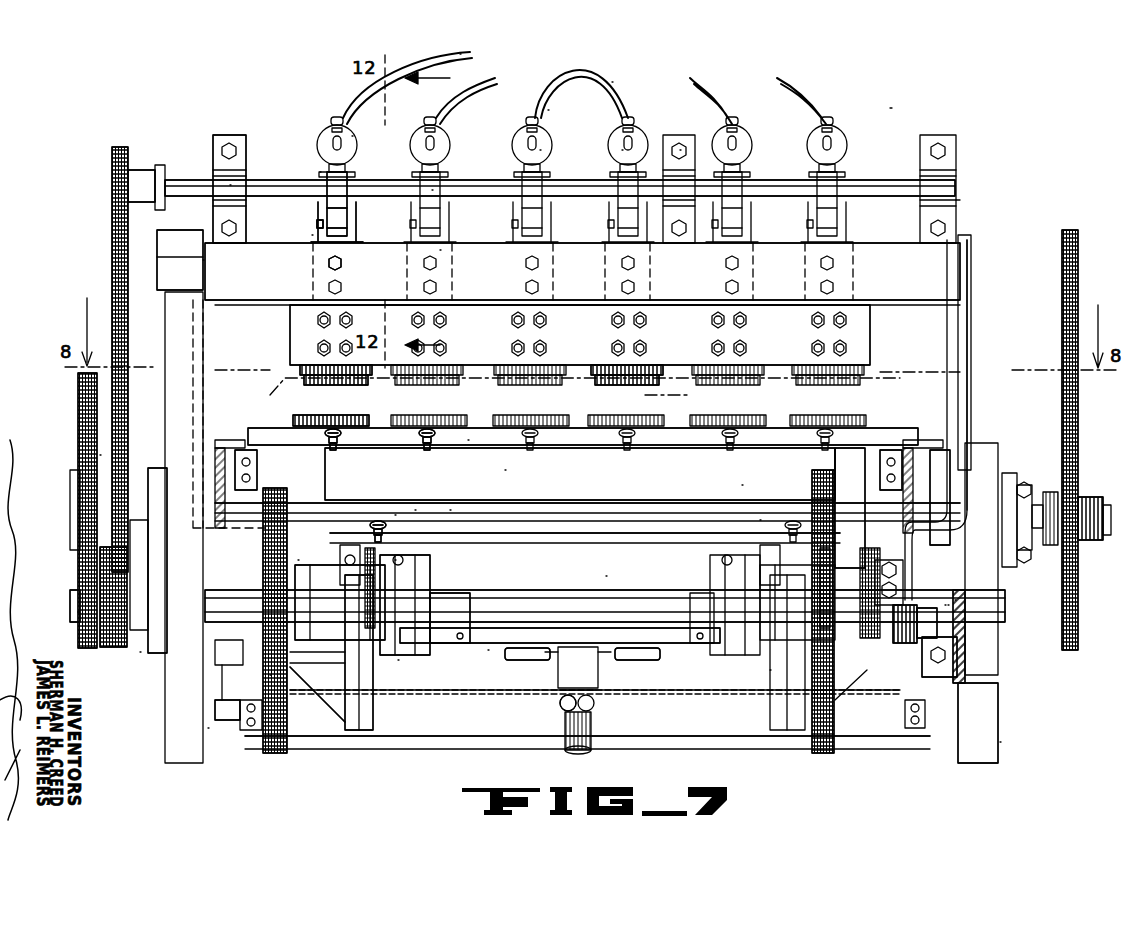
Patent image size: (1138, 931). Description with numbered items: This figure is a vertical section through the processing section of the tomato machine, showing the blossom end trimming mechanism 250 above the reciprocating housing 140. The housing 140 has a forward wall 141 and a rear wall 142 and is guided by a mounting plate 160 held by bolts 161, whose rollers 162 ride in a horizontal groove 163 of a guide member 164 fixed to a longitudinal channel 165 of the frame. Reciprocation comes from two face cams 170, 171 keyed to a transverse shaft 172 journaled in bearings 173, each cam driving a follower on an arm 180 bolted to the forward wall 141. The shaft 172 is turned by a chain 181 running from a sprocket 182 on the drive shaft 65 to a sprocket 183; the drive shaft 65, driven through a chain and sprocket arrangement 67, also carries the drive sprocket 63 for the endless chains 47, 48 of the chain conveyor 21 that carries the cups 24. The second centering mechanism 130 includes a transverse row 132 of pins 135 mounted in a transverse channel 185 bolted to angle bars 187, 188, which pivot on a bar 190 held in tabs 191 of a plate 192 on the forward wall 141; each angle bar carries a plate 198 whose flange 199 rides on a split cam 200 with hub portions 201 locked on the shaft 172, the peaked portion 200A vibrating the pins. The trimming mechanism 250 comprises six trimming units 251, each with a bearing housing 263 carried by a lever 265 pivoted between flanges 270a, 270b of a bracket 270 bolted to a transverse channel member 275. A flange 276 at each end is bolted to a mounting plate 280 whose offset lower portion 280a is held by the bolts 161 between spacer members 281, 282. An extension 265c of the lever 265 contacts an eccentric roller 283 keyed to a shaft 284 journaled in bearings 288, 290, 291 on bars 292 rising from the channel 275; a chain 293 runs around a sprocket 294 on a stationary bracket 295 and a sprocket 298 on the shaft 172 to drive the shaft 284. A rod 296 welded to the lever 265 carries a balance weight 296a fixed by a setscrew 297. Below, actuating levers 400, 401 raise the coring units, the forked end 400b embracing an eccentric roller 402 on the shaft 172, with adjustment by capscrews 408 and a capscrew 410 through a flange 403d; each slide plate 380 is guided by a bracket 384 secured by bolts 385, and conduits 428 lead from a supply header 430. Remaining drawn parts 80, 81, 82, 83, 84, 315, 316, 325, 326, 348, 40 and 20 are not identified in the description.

The blossom end trimming mechanism 250 is at (907, 101).
The flexible conduit 315 is at (462, 52).
The flexible conduit 316 is at (612, 82).
The trimming unit 251 is at (610, 112).
The bar 292 is at (213, 140).
The bearing 288 is at (230, 185).
The bearing 290 is at (693, 125).
The setscrew 297 is at (352, 136).
The balance weight 296a is at (540, 150).
The rod 296 is at (622, 150).
The bearing housing 263 is at (320, 172).
The eccentric roller 283 is at (432, 190).
The sprocket 294 is at (128, 188).
The stationary bracket 295 is at (150, 212).
The lever 265 is at (325, 210).
The extension 265c is at (316, 228).
The flange 276 is at (203, 260).
The flange 270a is at (312, 235).
The channel member 275 is at (282, 300).
The bracket 270 is at (360, 283).
The flange 270b is at (440, 250).
The shaft 284 is at (956, 184).
The bearing 291 is at (960, 205).
The chain 293 is at (112, 254).
The mounting plate 280 is at (203, 348).
The clamp block 348 is at (580, 335).
The knurled roller 325 is at (462, 386).
The knurled roller 326 is at (640, 380).
The cups 24 is at (520, 415).
The transverse row 132 is at (325, 438).
The second centering mechanism 130 is at (850, 450).
The bracket 82 is at (902, 450).
The endless chain 48 is at (935, 450).
The chain 181 is at (78, 412).
The sprocket 182 is at (100, 455).
The drive shaft 65 is at (75, 515).
The chain and sprocket arrangement 67 is at (1105, 580).
The drive sprocket 63 is at (225, 543).
The screw bracket 81 is at (258, 475).
The pins 135 is at (340, 448).
The angle bar 187 is at (440, 470).
The frame member 80 is at (500, 430).
The bracket 84 is at (505, 470).
The plate 198 is at (450, 510).
The arm 180 is at (298, 560).
The capscrew 410 is at (395, 515).
The tabs 191 is at (415, 510).
The transverse channel 185 is at (580, 474).
The bar 190 is at (598, 505).
The angle bar 188 is at (742, 485).
The forked end 400b is at (335, 560).
The capscrews 408 is at (395, 560).
The flange 199 is at (462, 540).
The flange 403d is at (760, 520).
The split cam 200 is at (430, 557).
The hub portions 201 is at (440, 580).
The forward wall 141 is at (605, 583).
The transverse shaft 172 is at (550, 605).
The plate 192 is at (603, 560).
The eccentric roller 402 is at (380, 606).
The actuating lever 400 is at (395, 660).
The housing 140 is at (492, 660).
The vertical slide plate 380 is at (400, 722).
The base bar 83 is at (490, 746).
The supply header 430 is at (565, 690).
The camming surface portion 200A is at (470, 636).
The conduit 428 is at (630, 648).
The rear wall 142 is at (670, 655).
The actuating lever 401 is at (770, 670).
The bracket 384 is at (400, 740).
The bolts 385 is at (295, 670).
The face cam 170 is at (275, 753).
The face cam 171 is at (830, 750).
The sprocket 298 is at (105, 600).
The sprocket 183 is at (78, 612).
The bearings 173 is at (140, 652).
The lower end portion 280a is at (270, 675).
The endless chain 47 is at (215, 724).
The chain conveyor 21 is at (200, 733).
The mounting plate 160 is at (917, 605).
The bolts 161 is at (955, 600).
The horizontal groove 163 is at (948, 605).
The guide member 164 is at (945, 605).
The rollers 162 is at (937, 612).
The longitudinal channel 165 is at (965, 630).
The spacer member 281 is at (895, 640).
The spacer member 282 is at (870, 690).
The frame plate 40 is at (998, 702).
The frame 20 is at (1012, 745).